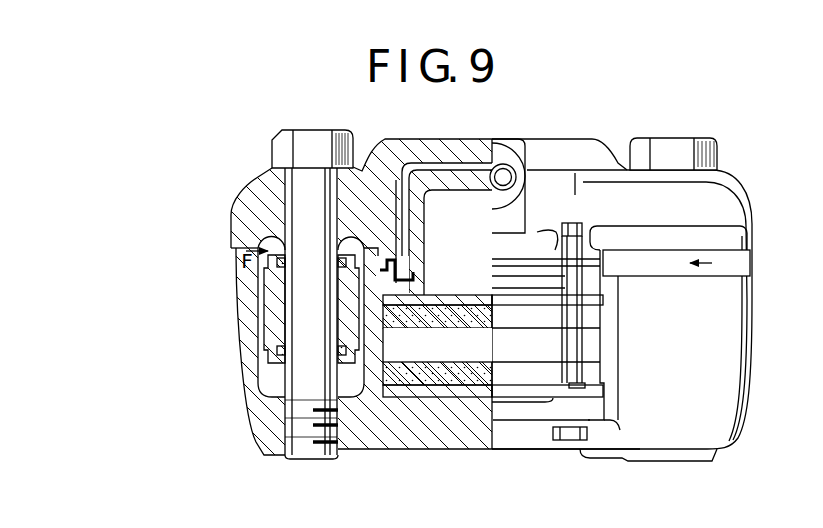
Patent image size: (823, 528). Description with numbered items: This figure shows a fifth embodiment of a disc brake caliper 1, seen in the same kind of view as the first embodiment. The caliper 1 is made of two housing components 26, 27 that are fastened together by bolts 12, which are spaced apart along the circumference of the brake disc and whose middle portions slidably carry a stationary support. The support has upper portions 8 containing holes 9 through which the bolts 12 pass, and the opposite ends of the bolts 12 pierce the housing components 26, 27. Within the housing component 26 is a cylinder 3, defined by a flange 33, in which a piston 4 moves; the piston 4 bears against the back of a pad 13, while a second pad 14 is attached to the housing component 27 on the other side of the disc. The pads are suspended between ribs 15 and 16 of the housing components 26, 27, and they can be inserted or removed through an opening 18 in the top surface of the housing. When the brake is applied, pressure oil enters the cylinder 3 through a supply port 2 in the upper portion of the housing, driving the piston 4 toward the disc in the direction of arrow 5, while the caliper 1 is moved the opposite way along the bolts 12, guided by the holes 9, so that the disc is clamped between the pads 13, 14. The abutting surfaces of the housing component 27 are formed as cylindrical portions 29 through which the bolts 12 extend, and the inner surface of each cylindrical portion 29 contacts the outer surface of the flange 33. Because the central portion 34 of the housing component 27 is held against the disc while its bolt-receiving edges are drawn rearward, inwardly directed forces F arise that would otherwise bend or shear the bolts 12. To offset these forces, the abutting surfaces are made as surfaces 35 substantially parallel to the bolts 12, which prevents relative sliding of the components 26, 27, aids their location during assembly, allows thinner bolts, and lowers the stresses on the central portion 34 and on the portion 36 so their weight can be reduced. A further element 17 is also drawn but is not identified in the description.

The caliper 1 is at (753, 410).
The pressure oil supply port 2 is at (498, 182).
The cylinder 3 is at (420, 168).
The piston 4 is at (445, 182).
The arrow 5 is at (438, 220).
The upper portion 8 is at (272, 312).
The hole 9 is at (295, 328).
The bolt 12 is at (304, 140).
The pad 13 is at (448, 315).
The pad 14 is at (413, 378).
The rib 15 is at (550, 250).
The rib 16 is at (553, 412).
The nut 17 is at (569, 440).
The opening 18 is at (406, 340).
The housing component 26 is at (262, 196).
The housing component 27 is at (262, 418).
The cylindrical portion 29 is at (372, 252).
The flange 33 is at (386, 255).
The central portion 34 is at (483, 420).
The surface 35 is at (414, 265).
The portion 36 is at (447, 150).